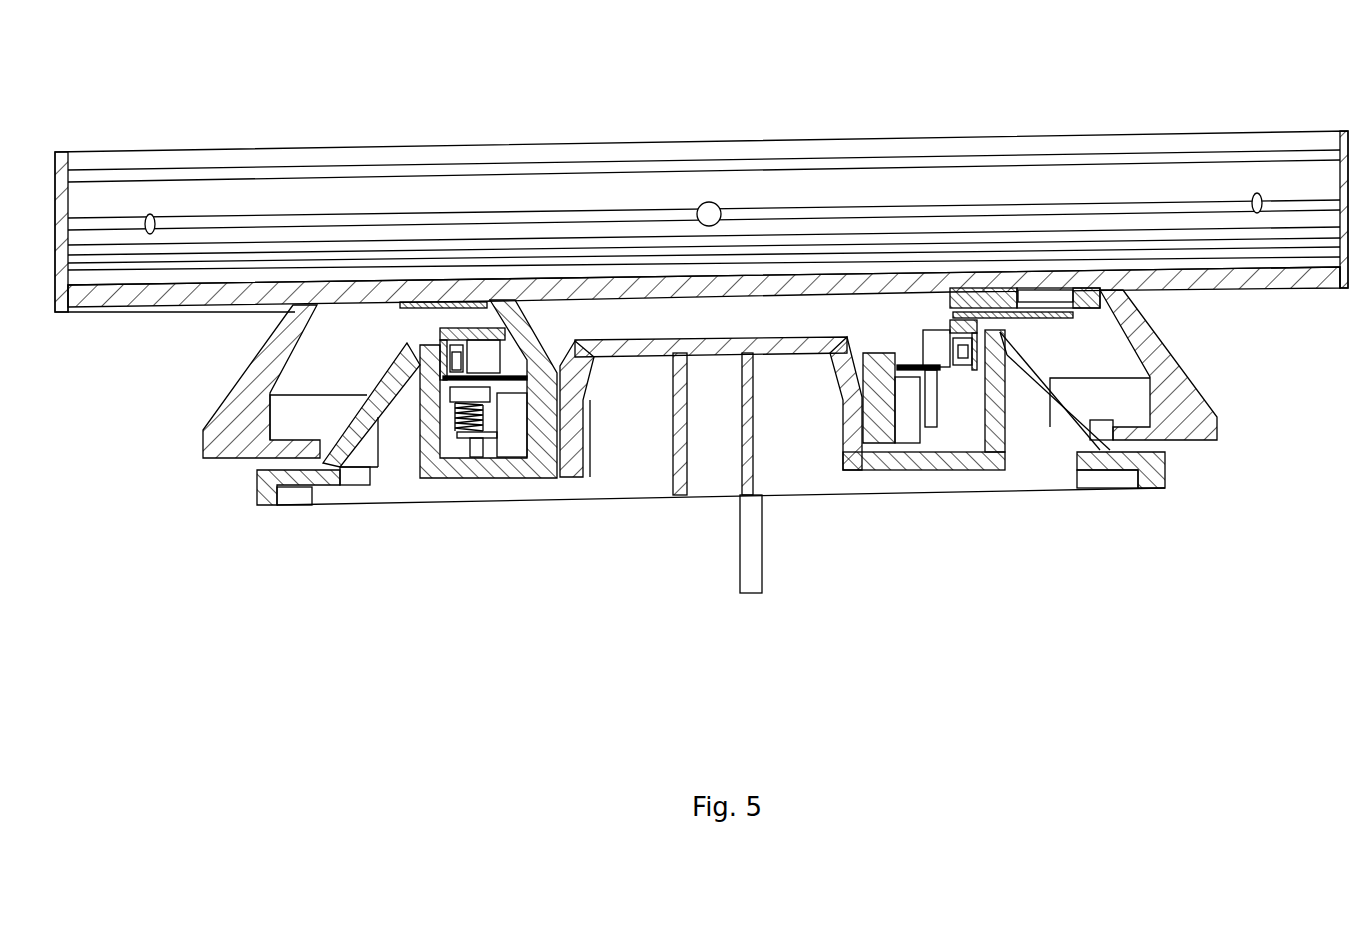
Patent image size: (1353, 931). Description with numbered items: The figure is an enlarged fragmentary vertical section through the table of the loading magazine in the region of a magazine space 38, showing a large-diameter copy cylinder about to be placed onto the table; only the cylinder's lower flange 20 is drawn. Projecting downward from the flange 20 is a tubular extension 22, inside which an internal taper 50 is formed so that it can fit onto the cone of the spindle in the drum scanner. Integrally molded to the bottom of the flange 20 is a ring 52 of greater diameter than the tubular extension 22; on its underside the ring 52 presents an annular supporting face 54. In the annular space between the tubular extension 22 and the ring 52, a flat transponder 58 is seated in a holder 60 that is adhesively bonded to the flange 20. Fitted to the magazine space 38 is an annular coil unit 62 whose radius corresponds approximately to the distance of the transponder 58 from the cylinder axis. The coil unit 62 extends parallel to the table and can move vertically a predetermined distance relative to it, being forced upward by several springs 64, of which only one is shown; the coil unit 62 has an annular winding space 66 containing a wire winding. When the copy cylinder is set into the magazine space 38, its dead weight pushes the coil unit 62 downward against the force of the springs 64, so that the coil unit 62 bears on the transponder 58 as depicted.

The lower flange 20 is at (108, 298).
The tubular extension 22 is at (532, 338).
The magazine space 38 is at (1165, 463).
The internal taper 50 is at (547, 430).
The ring 52 is at (230, 418).
The annular supporting face 54 is at (255, 457).
The transponder 58 is at (1057, 318).
The holder 60 is at (970, 297).
The coil unit 62 is at (923, 427).
The springs 64 is at (458, 432).
The annular winding space 66 is at (962, 372).